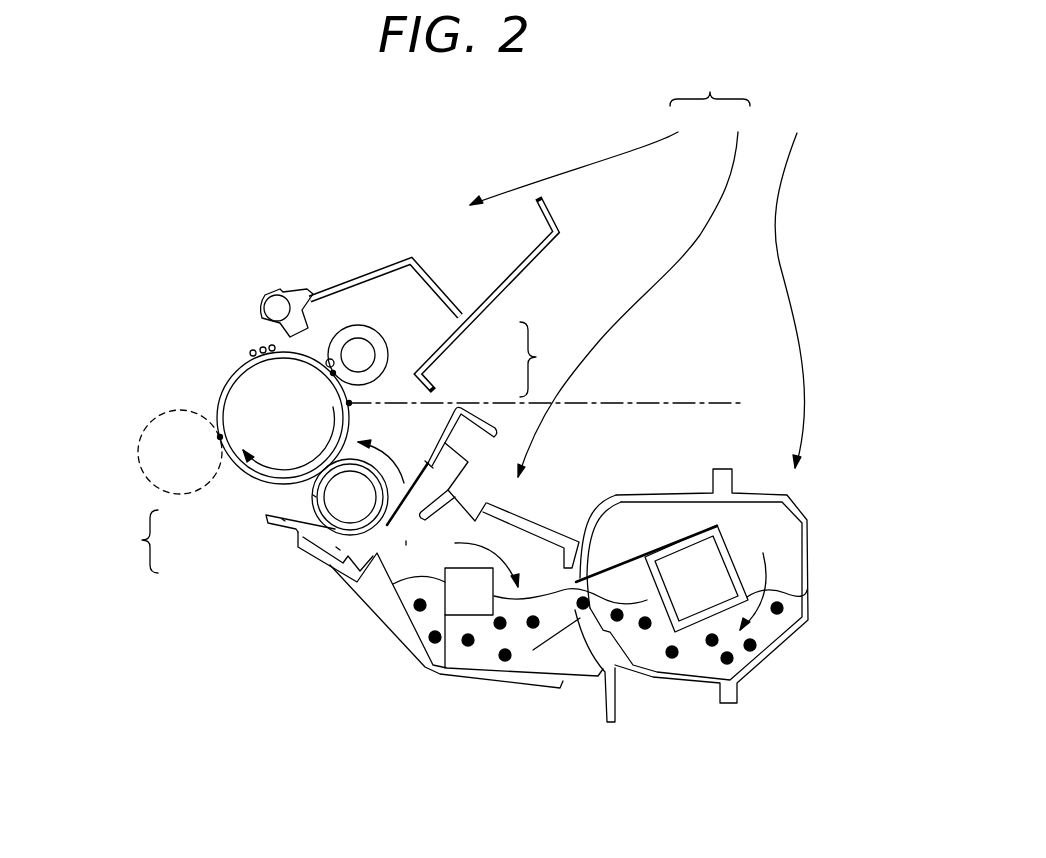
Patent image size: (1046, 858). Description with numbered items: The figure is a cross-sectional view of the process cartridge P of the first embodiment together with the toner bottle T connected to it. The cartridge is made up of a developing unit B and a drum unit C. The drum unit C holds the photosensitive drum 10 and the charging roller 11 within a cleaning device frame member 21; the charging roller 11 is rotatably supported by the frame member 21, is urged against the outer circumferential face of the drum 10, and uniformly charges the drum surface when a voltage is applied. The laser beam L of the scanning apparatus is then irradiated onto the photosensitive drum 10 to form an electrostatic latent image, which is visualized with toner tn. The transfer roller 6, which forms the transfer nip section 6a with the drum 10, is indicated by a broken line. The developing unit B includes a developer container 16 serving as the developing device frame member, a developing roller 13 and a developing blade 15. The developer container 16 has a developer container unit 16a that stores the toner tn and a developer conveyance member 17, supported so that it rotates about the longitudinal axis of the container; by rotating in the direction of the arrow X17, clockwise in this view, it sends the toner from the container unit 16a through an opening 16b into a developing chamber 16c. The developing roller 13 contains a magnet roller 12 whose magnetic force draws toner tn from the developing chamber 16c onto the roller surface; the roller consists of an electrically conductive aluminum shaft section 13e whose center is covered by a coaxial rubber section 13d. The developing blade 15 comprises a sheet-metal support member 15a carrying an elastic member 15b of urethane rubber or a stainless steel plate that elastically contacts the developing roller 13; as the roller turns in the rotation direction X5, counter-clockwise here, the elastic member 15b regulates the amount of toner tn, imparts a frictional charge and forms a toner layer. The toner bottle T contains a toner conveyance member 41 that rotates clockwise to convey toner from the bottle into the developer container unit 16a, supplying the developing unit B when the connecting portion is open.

The transfer roller 6 is at (138, 447).
The transfer nip section 6a is at (220, 437).
The photosensitive drum 10 is at (226, 383).
The charging roller 11 is at (357, 350).
The magnet roller 12 is at (320, 500).
The developing roller 13 is at (223, 535).
The rubber section 13d is at (313, 494).
The shaft section 13e is at (282, 519).
The developing blade 15 is at (473, 363).
The support member 15a is at (412, 470).
The elastic member 15b is at (442, 398).
The developer container 16 is at (515, 622).
The developer container unit 16a is at (533, 520).
The opening 16b is at (407, 543).
The developing chamber 16c is at (338, 547).
The developer conveyance member 17 is at (477, 603).
The cleaning device frame member 21 is at (382, 265).
The toner conveyance member 41 is at (723, 540).
The toner tn is at (505, 662).
The laser beam L is at (700, 402).
The process cartridge P is at (710, 82).
The drum unit C is at (580, 153).
The developing unit B is at (633, 289).
The toner bottle T is at (791, 284).
The rotation direction of developing roller X5 is at (381, 449).
The rotation direction of developer conveyance member X17 is at (505, 563).